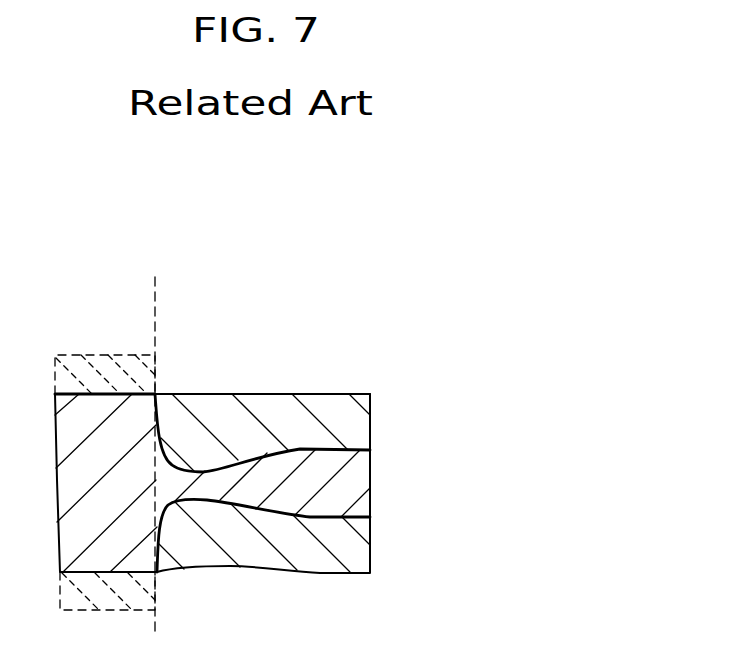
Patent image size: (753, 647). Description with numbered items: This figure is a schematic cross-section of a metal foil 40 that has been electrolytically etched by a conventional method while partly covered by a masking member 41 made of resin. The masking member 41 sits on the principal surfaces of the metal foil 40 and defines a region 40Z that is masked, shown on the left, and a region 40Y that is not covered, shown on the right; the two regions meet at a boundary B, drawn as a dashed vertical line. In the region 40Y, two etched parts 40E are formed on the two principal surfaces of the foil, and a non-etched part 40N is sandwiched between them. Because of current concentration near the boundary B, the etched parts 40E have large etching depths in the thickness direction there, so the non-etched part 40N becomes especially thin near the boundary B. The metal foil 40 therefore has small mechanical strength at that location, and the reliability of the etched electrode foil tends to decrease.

The metal foil 40 is at (313, 243).
The region masked by masking member 40Z is at (155, 278).
The region not covered by masking member 40Y is at (373, 287).
The masking member 41 is at (73, 353).
The boundary B is at (155, 306).
The etched part 40E is at (352, 413).
The non-etched part 40N is at (345, 482).